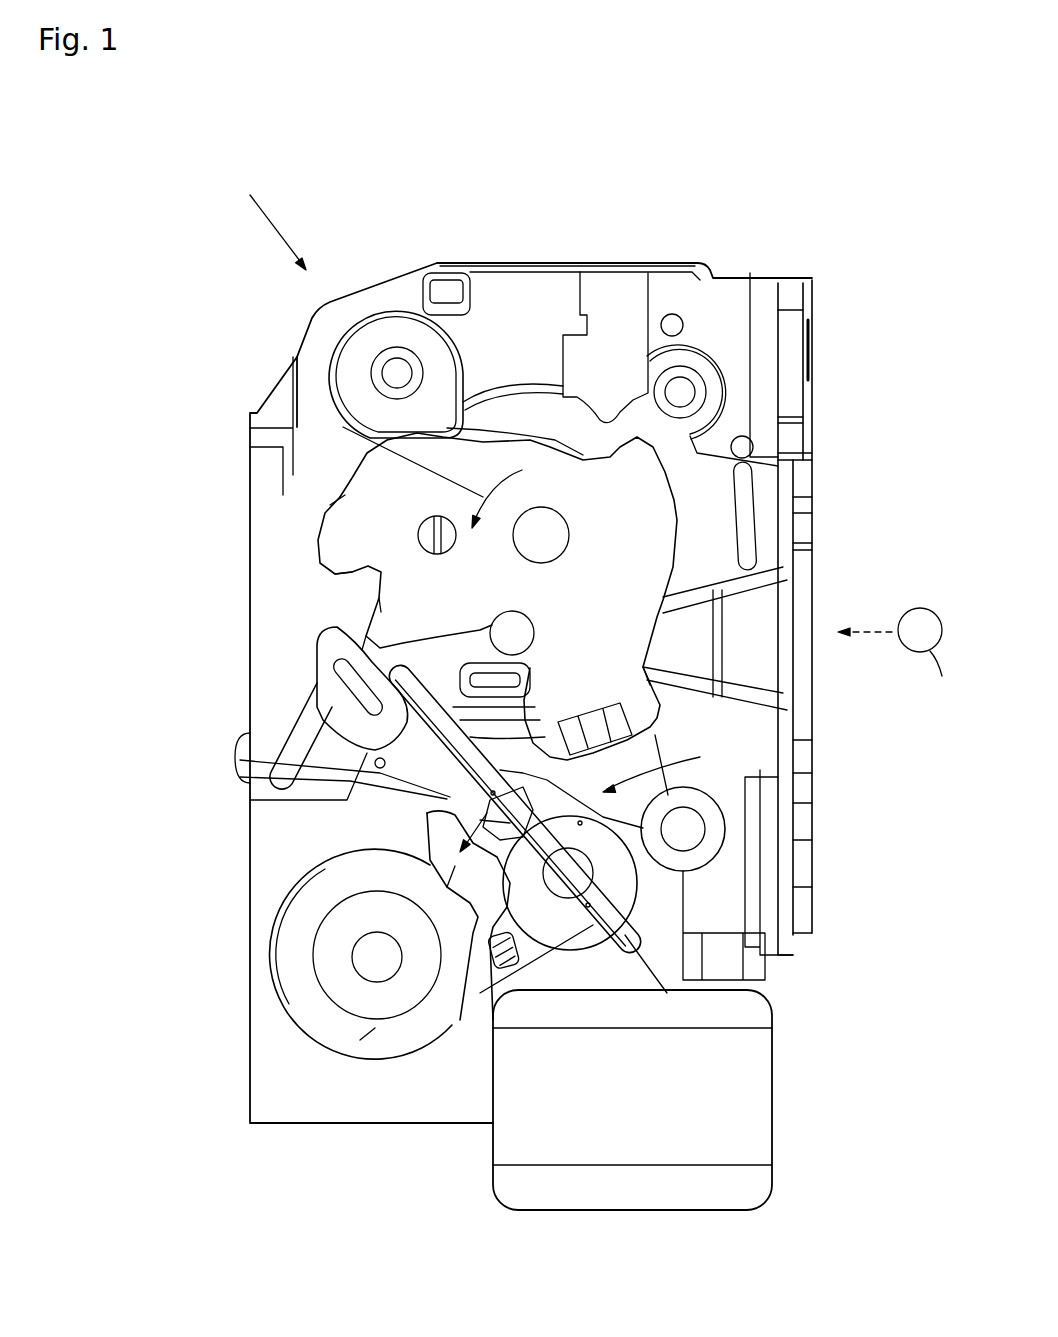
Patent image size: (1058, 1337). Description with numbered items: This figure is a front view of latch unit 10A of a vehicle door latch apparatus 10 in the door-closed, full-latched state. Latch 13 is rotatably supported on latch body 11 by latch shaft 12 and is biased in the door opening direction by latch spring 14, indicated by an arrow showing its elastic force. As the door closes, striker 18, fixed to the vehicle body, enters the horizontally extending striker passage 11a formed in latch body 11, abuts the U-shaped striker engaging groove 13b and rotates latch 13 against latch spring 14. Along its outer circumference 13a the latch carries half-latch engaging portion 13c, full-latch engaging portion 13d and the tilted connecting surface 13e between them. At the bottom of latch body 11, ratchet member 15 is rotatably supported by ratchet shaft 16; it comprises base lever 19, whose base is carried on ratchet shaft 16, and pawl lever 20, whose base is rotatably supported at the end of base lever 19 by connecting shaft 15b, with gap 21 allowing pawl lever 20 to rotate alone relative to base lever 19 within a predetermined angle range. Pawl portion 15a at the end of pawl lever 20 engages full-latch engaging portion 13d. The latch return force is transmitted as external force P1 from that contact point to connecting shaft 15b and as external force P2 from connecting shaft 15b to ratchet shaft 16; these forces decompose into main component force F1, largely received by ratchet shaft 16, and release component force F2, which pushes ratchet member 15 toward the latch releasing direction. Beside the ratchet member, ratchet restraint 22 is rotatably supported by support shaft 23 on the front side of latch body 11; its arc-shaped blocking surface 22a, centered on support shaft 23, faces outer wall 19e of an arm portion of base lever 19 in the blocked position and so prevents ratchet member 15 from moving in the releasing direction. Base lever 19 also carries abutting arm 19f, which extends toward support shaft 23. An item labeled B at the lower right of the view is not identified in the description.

The door lock device 10 is at (265, 219).
The latch unit 10A is at (488, 265).
The latch body 11 is at (728, 300).
The striker passage 11a is at (752, 616).
The latch shaft 12 is at (541, 507).
The latch 13 is at (652, 503).
The outer circumference 13a is at (335, 512).
The striker engaging groove 13b is at (660, 665).
The half-latch engaging portion 13c is at (347, 582).
The full-latch engaging portion 13d is at (530, 647).
The tilted connecting surface 13e is at (392, 615).
The latch spring 14 is at (385, 455).
The ratchet member 15 is at (663, 733).
The pawl portion 15a is at (240, 761).
The connecting shaft 15b is at (423, 803).
The ratchet shaft 16 is at (560, 895).
The striker 18 is at (525, 622).
The base lever 19 is at (663, 890).
The outer wall 19e is at (415, 890).
The abutting arm 19f is at (367, 1032).
The pawl lever 20 is at (323, 678).
The gap 21 is at (440, 800).
The ratchet restraint 22 is at (305, 930).
The blocking surface 22a is at (455, 866).
The support shaft 23 is at (373, 960).
The external force P1 is at (375, 765).
The external force P2 is at (590, 903).
The main component force F1 is at (580, 823).
The release component force F2 is at (493, 793).
The cover B is at (639, 1100).